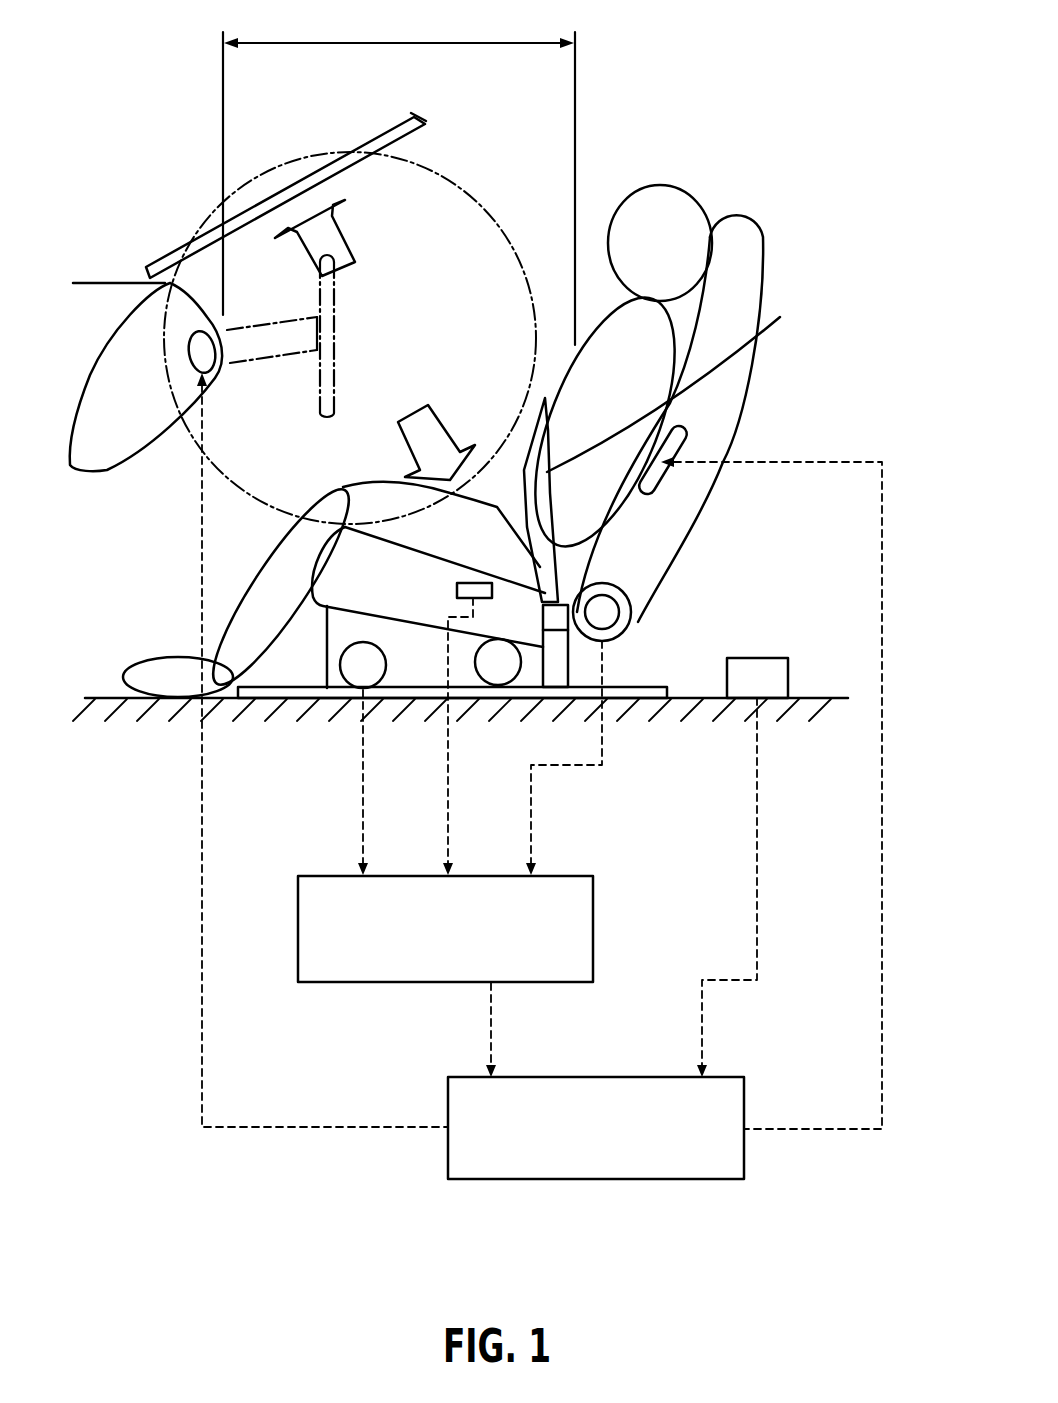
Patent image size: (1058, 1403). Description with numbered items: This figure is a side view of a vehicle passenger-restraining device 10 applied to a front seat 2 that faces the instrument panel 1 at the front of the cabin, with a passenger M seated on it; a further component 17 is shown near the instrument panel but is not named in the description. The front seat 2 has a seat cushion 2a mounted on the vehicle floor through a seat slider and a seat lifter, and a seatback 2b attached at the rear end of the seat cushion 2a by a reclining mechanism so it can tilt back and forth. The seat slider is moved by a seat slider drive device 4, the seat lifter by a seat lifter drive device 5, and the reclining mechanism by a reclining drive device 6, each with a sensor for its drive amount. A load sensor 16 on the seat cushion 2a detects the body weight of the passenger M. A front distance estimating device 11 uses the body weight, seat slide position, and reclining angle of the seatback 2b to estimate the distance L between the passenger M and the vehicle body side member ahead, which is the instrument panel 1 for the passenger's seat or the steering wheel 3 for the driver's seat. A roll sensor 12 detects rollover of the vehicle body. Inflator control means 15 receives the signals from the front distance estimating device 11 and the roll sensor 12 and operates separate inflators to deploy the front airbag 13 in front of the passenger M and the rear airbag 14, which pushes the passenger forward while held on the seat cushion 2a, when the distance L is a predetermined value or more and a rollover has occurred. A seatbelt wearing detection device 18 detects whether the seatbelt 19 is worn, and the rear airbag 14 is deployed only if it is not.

The instrument panel 1 is at (220, 300).
The front seat 2 is at (518, 451).
The seat cushion 2a is at (343, 570).
The seatback 2b is at (637, 535).
The steering wheel 3 is at (337, 330).
The seat slider drive device 4 is at (353, 663).
The seat lifter drive device 5 is at (497, 667).
The reclining drive device 6 is at (627, 617).
The vehicle passenger-restraining device 10 is at (748, 136).
The front distance estimating device 11 is at (334, 982).
The roll sensor 12 is at (757, 655).
The front airbag 13 is at (473, 195).
The rear airbag 14 is at (680, 437).
The inflator control means 15 is at (599, 1181).
The load sensor 16 is at (453, 593).
The instrument panel 17 is at (357, 165).
The seatbelt wearing detection device 18 is at (557, 667).
The seatbelt 19 is at (680, 384).
The distance in front of the passenger L is at (399, 178).
The passenger M is at (552, 374).